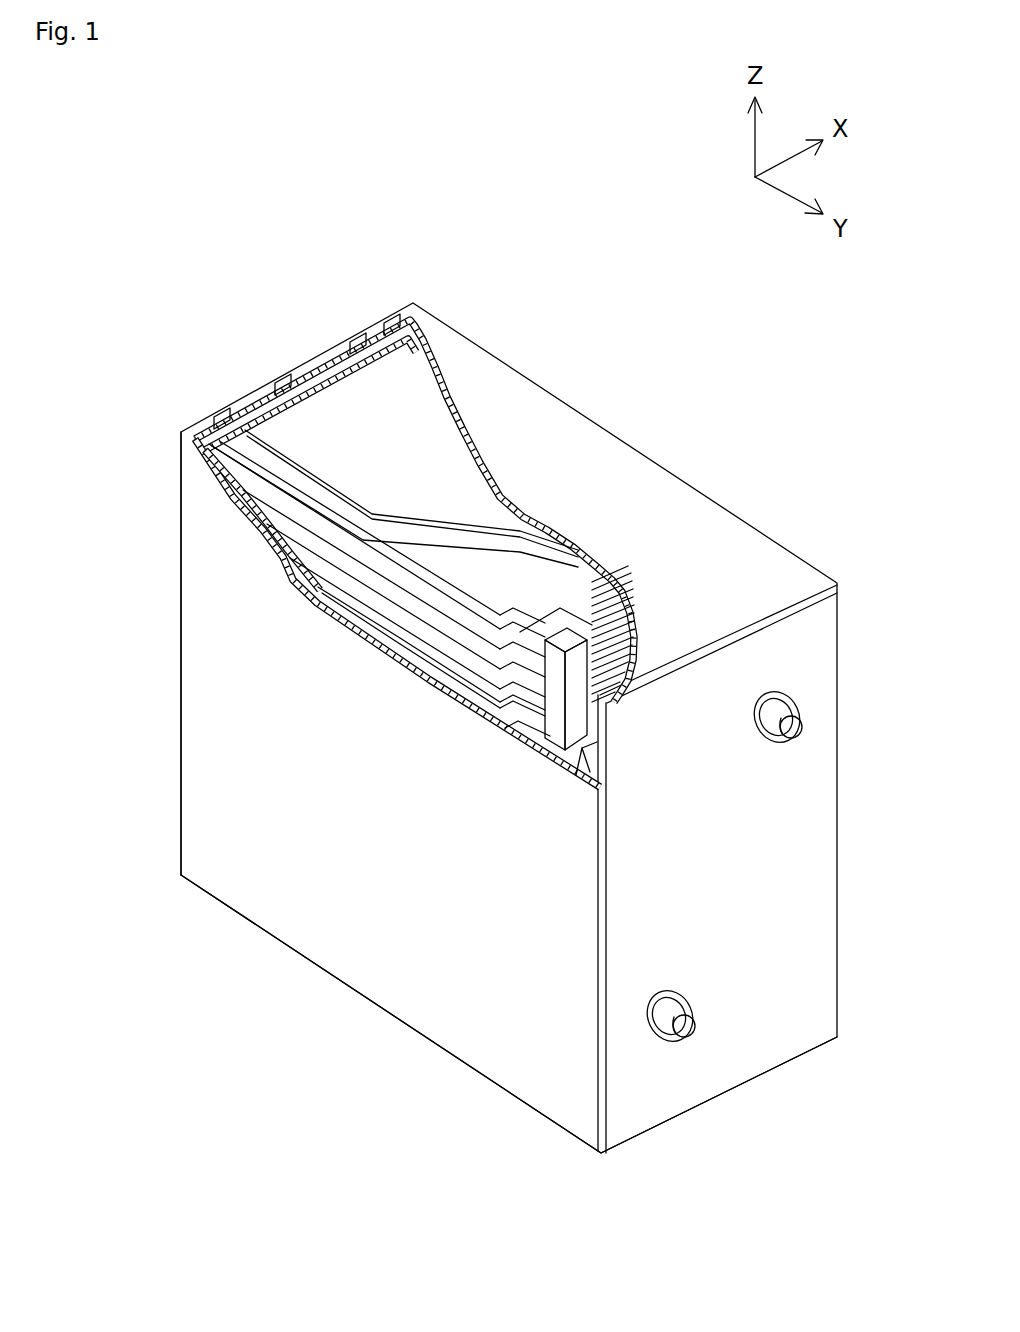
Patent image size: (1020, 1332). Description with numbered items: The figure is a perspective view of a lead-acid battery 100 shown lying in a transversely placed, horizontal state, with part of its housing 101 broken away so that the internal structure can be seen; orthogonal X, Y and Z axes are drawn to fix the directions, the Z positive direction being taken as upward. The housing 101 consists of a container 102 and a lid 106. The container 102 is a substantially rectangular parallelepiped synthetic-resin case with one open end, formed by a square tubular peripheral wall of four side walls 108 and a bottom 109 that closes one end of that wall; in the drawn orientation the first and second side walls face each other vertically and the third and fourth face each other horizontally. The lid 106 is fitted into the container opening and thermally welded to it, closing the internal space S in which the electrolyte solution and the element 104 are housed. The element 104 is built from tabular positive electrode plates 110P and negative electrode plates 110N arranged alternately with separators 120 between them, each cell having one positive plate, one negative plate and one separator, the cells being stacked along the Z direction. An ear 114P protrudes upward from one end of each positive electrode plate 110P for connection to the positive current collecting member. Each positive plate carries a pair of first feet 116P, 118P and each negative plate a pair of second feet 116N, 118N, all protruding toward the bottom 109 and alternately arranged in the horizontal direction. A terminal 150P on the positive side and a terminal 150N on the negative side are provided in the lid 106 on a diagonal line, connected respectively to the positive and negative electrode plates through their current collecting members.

The lead-acid battery 100 is at (590, 270).
The housing 101 is at (628, 1231).
The container 102 is at (580, 1115).
The element 104 is at (102, 492).
The lid 106 is at (640, 1125).
The side walls 108 is at (190, 948).
The bottom 109 is at (183, 792).
The negative electrode plates 110N is at (255, 455).
The positive electrode plates 110P is at (405, 548).
The ear 114P is at (547, 628).
The second foot 116N is at (380, 328).
The first foot 116P is at (227, 409).
The second foot 118N is at (277, 379).
The first foot 118P is at (343, 349).
The separators 120 is at (300, 483).
The terminal on the negative electrode side 150N is at (801, 727).
The terminal on the positive electrode side 150P is at (690, 1030).
The internal space S is at (589, 742).